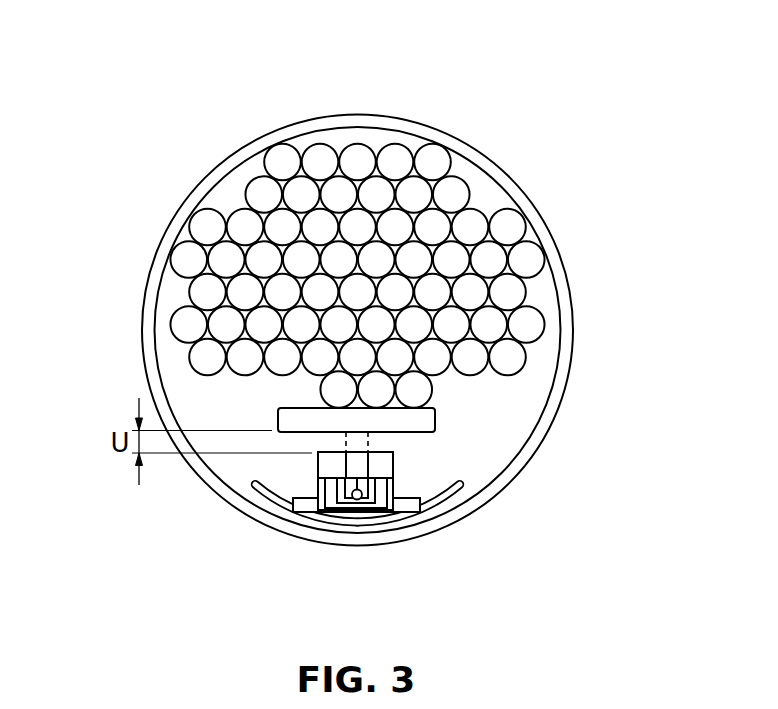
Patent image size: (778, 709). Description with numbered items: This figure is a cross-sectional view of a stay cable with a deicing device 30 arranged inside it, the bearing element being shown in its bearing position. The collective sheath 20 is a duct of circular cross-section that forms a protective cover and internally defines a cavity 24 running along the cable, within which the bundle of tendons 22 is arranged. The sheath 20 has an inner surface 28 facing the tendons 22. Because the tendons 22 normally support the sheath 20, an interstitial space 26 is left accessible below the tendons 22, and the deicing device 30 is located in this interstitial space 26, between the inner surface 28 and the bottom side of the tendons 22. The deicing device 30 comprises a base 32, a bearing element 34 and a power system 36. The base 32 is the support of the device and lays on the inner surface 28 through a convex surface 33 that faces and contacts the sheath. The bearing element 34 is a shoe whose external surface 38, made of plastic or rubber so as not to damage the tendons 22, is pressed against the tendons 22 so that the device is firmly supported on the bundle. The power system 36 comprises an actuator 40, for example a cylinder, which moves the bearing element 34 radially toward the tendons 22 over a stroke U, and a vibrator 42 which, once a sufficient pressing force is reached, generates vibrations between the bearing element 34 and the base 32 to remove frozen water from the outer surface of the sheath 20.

The collective sheath 20 is at (537, 210).
The tendons 22 is at (398, 150).
The cavity 24 is at (537, 292).
The interstitial space 26 is at (240, 463).
The inner surface 28 is at (162, 388).
The deicing device 30 is at (428, 456).
The base 32 is at (433, 503).
The convex surface 33 is at (263, 498).
The bearing element 34 is at (437, 418).
The power system 36 is at (387, 500).
The external surface 38 is at (279, 409).
The actuator 40 is at (332, 462).
The vibrator 42 is at (355, 499).